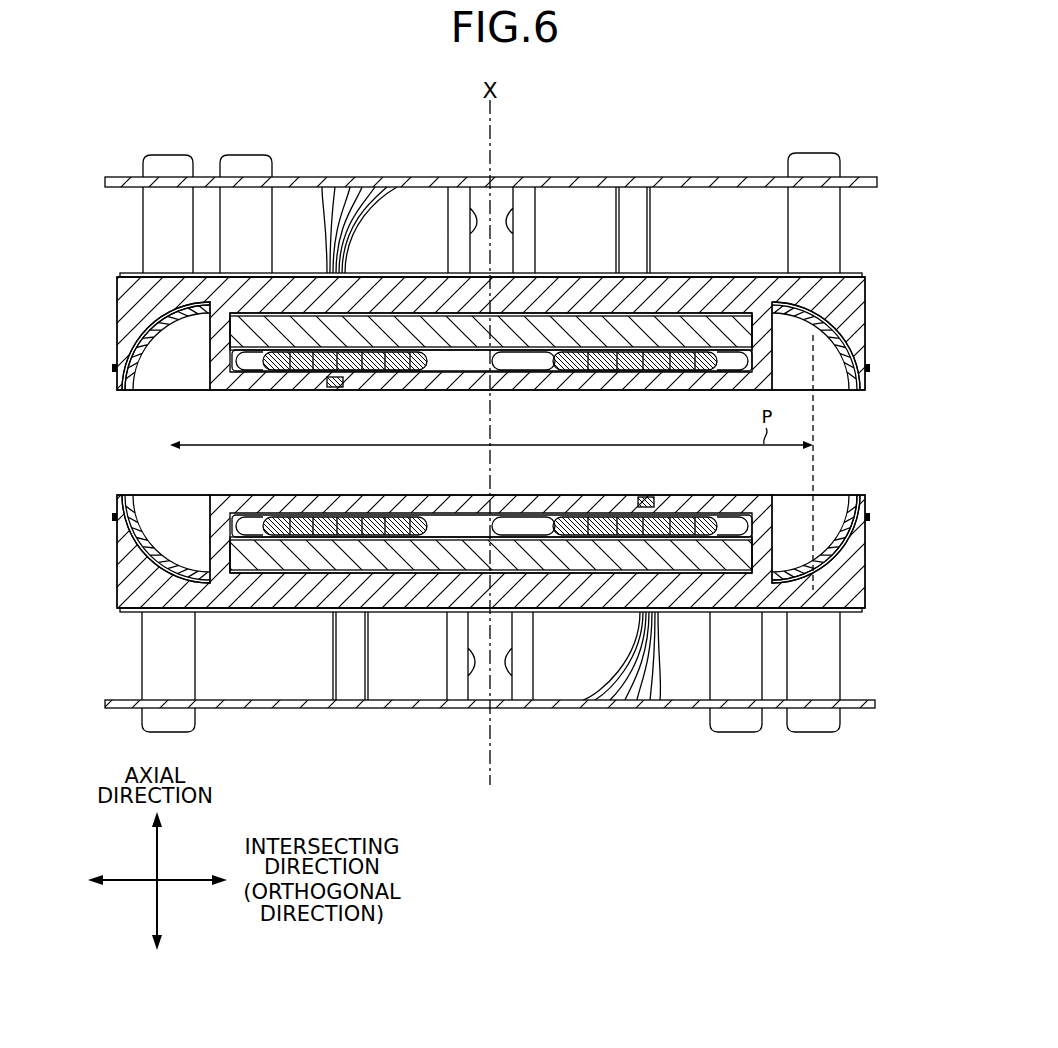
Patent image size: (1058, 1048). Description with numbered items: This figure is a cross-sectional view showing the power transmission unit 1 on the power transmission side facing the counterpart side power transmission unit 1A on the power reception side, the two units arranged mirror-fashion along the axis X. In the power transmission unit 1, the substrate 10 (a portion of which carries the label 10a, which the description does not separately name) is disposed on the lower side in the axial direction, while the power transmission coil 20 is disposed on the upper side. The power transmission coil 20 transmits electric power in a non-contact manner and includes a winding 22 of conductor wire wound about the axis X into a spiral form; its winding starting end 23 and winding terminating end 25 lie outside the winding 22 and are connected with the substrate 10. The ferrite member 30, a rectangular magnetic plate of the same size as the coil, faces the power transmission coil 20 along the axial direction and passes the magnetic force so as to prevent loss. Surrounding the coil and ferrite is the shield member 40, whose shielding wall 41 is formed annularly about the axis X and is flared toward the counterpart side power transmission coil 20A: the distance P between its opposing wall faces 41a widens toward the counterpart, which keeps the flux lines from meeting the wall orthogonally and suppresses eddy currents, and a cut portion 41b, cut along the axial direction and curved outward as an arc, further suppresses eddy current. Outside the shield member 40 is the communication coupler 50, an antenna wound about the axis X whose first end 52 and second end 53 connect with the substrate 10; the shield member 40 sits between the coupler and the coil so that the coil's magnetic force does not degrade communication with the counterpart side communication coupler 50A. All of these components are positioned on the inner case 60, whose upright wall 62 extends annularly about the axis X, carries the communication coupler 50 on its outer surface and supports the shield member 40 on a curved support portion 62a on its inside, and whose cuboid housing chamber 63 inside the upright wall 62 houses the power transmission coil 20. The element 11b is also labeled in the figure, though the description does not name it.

The power transmission unit 1 is at (854, 774).
The counterpart side power transmission unit 1A is at (854, 130).
The substrate 10 is at (497, 442).
The base plate surface 10a is at (95, 188).
The lead wires / connector 11b is at (328, 222).
The power transmission coil 20 is at (432, 514).
The counterpart side power transmission coil 20A is at (436, 373).
The winding 22 is at (491, 443).
The winding starting end 23 is at (506, 220).
The winding terminating end 25 is at (477, 220).
The ferrite member 30 is at (516, 373).
The shield member 40 is at (148, 384).
The shielding wall 41 is at (502, 442).
The wall faces 41a is at (502, 442).
The cut portion 41b is at (502, 442).
The communication coupler 50 is at (112, 517).
The counterpart side communication coupler 50A is at (112, 368).
The first end 52 is at (651, 244).
The second end 53 is at (616, 250).
The inner case 60 is at (491, 442).
The upright wall 62 is at (117, 346).
The support portion 62a is at (143, 329).
The housing chamber 63 is at (699, 398).